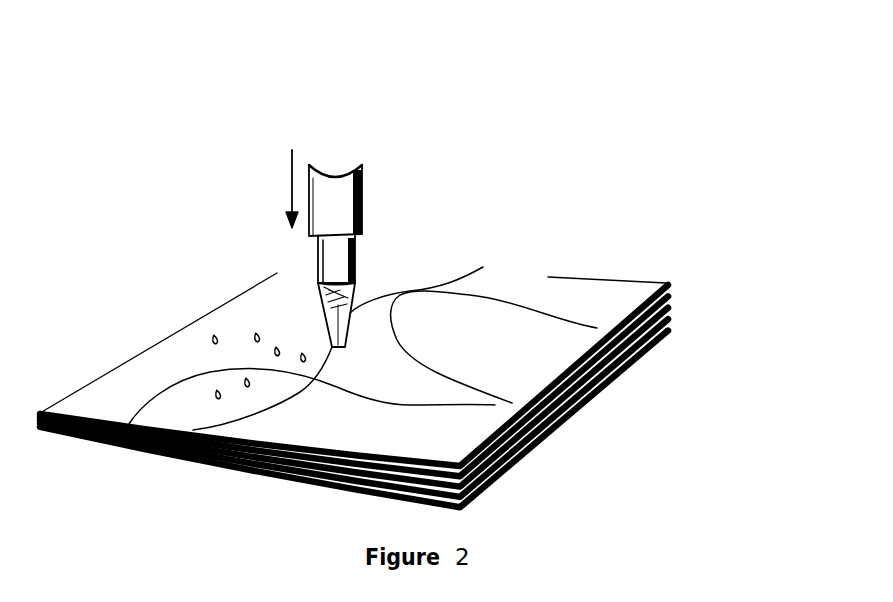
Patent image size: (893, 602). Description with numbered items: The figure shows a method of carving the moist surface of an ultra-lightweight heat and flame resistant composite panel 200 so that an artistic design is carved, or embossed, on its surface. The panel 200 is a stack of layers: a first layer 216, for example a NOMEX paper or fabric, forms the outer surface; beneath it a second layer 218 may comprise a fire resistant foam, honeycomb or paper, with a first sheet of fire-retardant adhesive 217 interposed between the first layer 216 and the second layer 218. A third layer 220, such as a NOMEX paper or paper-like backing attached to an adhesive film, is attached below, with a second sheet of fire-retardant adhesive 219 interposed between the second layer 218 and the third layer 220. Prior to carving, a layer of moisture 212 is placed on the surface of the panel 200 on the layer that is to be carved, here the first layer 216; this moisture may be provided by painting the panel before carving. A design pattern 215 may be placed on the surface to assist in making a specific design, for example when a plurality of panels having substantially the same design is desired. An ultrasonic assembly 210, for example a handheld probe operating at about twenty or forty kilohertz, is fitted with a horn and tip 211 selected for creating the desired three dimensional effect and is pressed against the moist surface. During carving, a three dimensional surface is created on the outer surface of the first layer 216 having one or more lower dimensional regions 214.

The composite panel 200 is at (397, 255).
The ultrasonic assembly 210 is at (362, 208).
The horn and tip 211 is at (330, 323).
The layer of moisture 212 is at (211, 338).
The lower dimensional regions 214 is at (283, 411).
The design pattern 215 is at (483, 267).
The first layer 216 is at (668, 282).
The first sheet of fire-retardant adhesive 217 is at (673, 293).
The second layer 218 is at (673, 304).
The second sheet of fire-retardant adhesive 219 is at (673, 315).
The third layer 220 is at (674, 327).